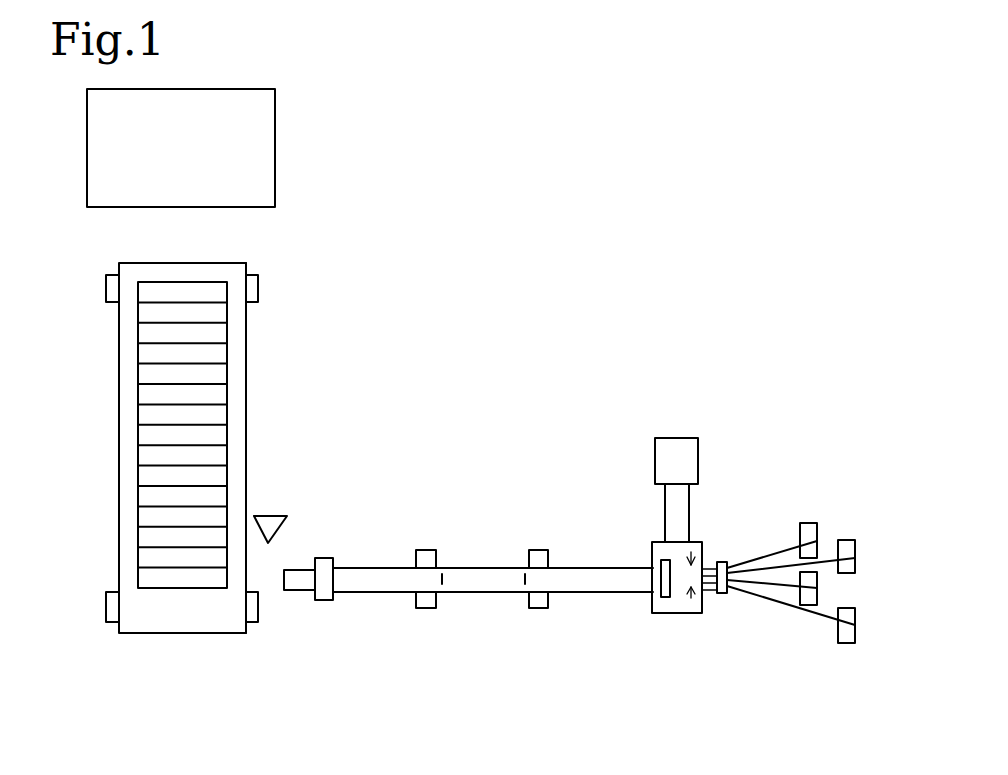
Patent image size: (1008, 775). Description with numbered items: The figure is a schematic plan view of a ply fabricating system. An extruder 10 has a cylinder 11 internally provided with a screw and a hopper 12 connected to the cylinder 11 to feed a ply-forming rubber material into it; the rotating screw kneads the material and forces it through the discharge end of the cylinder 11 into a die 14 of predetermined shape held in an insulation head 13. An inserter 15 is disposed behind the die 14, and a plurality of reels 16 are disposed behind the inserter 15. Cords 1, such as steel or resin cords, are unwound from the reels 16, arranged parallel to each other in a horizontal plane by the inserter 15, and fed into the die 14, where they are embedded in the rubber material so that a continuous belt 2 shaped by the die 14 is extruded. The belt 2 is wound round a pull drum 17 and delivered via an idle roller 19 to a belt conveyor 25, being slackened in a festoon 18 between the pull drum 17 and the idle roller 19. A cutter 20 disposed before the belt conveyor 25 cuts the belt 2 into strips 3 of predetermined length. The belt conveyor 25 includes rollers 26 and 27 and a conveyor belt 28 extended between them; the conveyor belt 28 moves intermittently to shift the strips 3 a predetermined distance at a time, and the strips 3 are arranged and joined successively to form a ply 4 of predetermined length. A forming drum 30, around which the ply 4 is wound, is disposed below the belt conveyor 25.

The cords 1 is at (770, 553).
The belt 2 is at (578, 567).
The strips 3 is at (216, 370).
The ply 4 is at (136, 395).
The extruder 10 is at (690, 540).
The cylinder 11 is at (665, 503).
The hopper 12 is at (698, 457).
The insulation head 13 is at (680, 615).
The die 14 is at (665, 598).
The inserter 15 is at (722, 595).
The reels 16 is at (855, 540).
The pull drum 17 is at (541, 610).
The festoon 18 is at (487, 598).
The idle roller 19 is at (427, 609).
The cutter 20 is at (286, 525).
The belt conveyor 25 is at (112, 453).
The roller 26 is at (105, 603).
The roller 27 is at (105, 288).
The conveyor belt 28 is at (247, 398).
The forming drum 30 is at (289, 148).